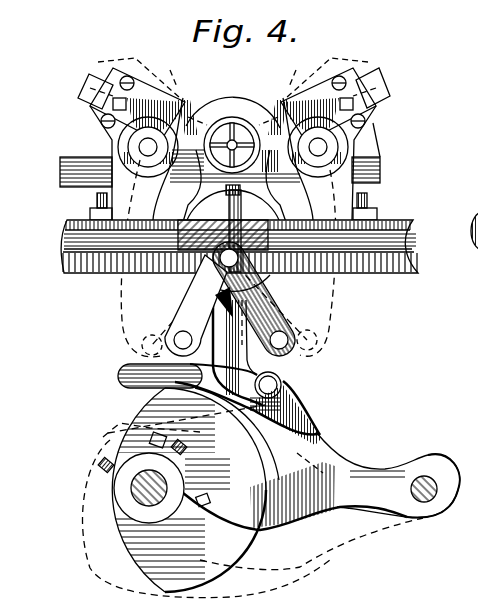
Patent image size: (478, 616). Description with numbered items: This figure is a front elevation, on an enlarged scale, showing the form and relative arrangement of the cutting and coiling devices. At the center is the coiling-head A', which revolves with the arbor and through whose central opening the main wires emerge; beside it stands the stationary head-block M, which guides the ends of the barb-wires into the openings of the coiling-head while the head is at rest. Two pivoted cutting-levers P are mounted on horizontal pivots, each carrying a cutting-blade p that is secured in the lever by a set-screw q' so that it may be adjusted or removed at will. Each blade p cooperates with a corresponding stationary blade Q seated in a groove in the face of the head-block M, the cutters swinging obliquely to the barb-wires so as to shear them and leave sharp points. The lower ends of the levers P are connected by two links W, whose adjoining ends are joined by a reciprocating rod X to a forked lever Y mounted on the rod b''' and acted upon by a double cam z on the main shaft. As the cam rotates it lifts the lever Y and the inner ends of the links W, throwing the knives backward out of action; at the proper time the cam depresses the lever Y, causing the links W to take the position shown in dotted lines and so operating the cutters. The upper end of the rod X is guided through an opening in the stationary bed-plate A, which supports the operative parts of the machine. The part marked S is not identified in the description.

The cutting-blade p is at (92, 90).
The set-screw q' is at (246, 100).
The coiling-head A' is at (232, 126).
The stationary head-block M is at (233, 154).
The stationary cutting-blade Q is at (477, 177).
The pivoted cutting-lever P is at (366, 290).
The stationary bed-plate A is at (239, 238).
The link W is at (346, 312).
The reciprocating rod X is at (283, 370).
The forked lever Y is at (343, 433).
The double cam z is at (118, 560).
The hub shaft S is at (140, 488).
The rod b''' is at (432, 515).